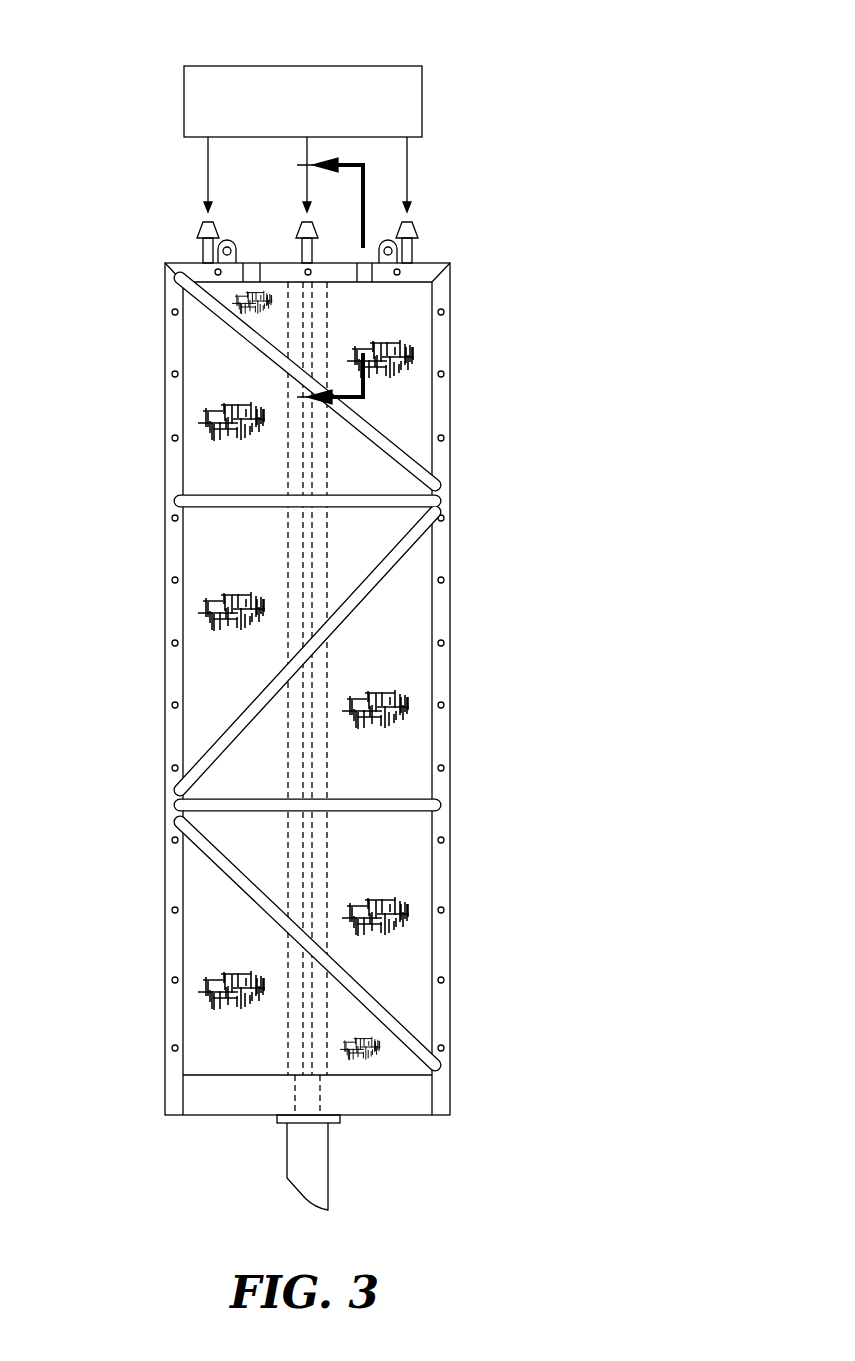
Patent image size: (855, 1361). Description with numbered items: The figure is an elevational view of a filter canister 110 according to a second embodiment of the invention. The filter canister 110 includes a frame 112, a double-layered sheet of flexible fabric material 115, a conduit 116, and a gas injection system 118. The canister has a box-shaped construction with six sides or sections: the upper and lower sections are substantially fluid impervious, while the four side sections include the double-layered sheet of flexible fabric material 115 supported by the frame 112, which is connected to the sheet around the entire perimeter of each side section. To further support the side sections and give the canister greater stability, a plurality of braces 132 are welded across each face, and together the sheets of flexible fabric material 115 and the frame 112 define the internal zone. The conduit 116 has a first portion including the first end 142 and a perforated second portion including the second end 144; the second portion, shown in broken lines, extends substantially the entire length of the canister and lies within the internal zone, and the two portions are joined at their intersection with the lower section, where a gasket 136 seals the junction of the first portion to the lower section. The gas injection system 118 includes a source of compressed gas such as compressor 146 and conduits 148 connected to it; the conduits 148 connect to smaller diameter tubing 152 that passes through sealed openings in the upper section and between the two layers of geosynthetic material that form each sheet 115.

The filter canister 110 is at (690, 501).
The frame 112 is at (485, 390).
The double-layered sheet of flexible fabric material 115 is at (420, 937).
The conduit 116 is at (362, 1172).
The gas injection system 118 is at (323, 133).
The braces 132 is at (413, 470).
The gasket 136 is at (335, 1118).
The first end 142 is at (320, 1192).
The second end 144 is at (330, 745).
The compressor 146 is at (203, 72).
The conduits 148 is at (208, 192).
The smaller diameter tubing 152 is at (308, 681).